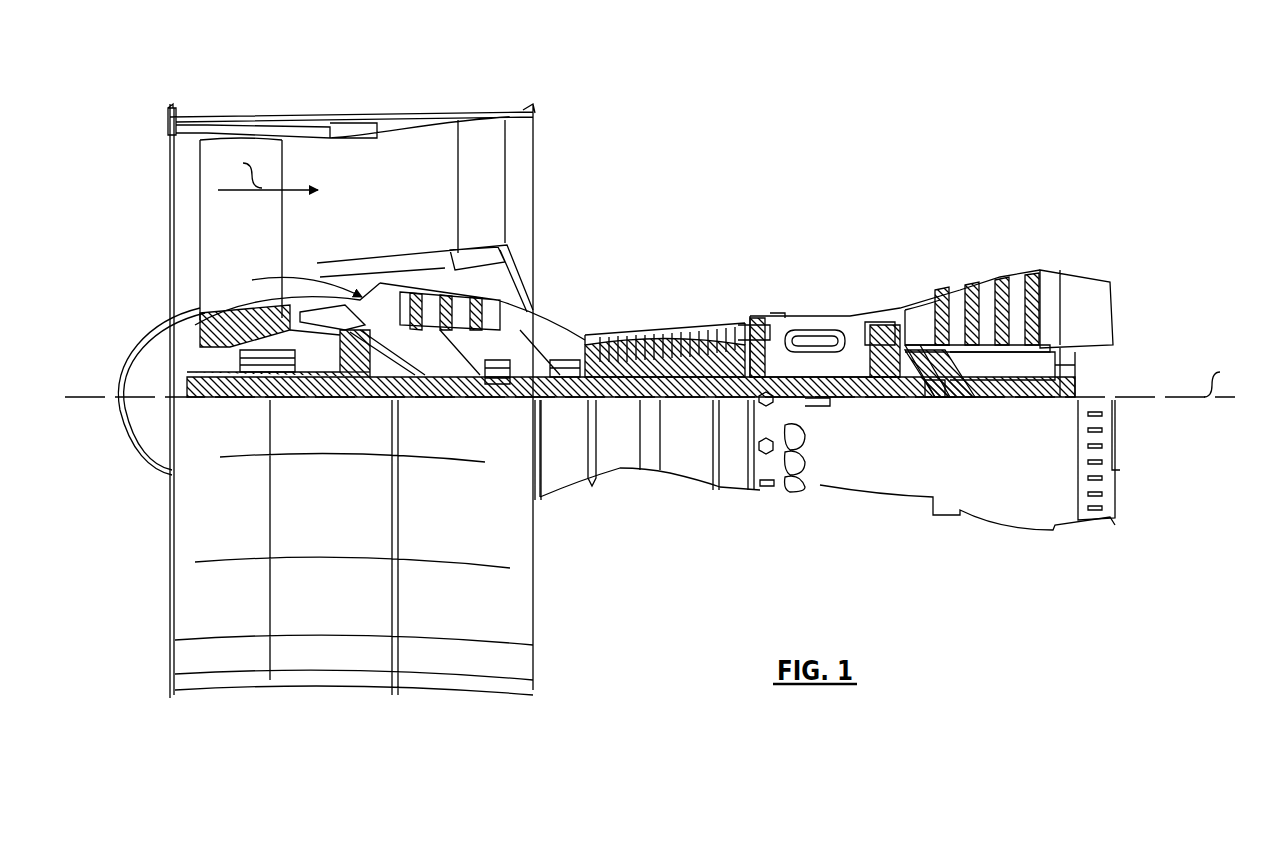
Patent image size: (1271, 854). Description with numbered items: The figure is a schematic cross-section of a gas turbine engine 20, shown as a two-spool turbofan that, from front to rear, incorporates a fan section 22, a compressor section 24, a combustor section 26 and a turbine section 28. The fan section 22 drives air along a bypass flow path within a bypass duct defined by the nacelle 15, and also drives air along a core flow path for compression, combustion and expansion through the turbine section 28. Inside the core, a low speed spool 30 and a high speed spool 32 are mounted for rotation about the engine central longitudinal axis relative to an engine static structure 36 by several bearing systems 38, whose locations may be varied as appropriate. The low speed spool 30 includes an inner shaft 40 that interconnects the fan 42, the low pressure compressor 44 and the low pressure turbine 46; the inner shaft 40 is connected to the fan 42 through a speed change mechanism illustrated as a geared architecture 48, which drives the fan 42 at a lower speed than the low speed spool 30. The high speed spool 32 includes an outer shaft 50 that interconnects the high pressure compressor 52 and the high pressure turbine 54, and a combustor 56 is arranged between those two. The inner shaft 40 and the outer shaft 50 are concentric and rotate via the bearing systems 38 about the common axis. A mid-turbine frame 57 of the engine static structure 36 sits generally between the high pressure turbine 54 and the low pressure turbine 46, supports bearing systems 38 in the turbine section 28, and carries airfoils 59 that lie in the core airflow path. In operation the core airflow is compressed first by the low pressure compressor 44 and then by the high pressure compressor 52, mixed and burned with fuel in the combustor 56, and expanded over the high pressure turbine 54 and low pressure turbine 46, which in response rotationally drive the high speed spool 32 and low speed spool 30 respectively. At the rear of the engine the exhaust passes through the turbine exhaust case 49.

The gas turbine engine 20 is at (814, 163).
The nacelle 15 is at (350, 120).
The fan section 22 is at (283, 106).
The fan 42 is at (257, 243).
The compressor section 24 is at (585, 308).
The low pressure compressor 44 is at (453, 307).
The high pressure compressor 52 is at (667, 367).
The combustor section 26 is at (806, 297).
The high speed spool 32 is at (738, 347).
The combustor 56 is at (812, 340).
The high pressure turbine 54 is at (876, 320).
The mid-turbine frame 57 is at (917, 307).
The turbine section 28 is at (954, 259).
The low pressure turbine 46 is at (1000, 280).
The airfoils 59 is at (950, 367).
The turbine exhaust case 49 is at (1116, 290).
The low speed spool 30 is at (692, 402).
The engine static structure 36 is at (732, 488).
The inner shaft 40 is at (553, 400).
The outer shaft 50 is at (815, 394).
The bearing systems 38 is at (935, 383).
The geared architecture 48 is at (360, 378).